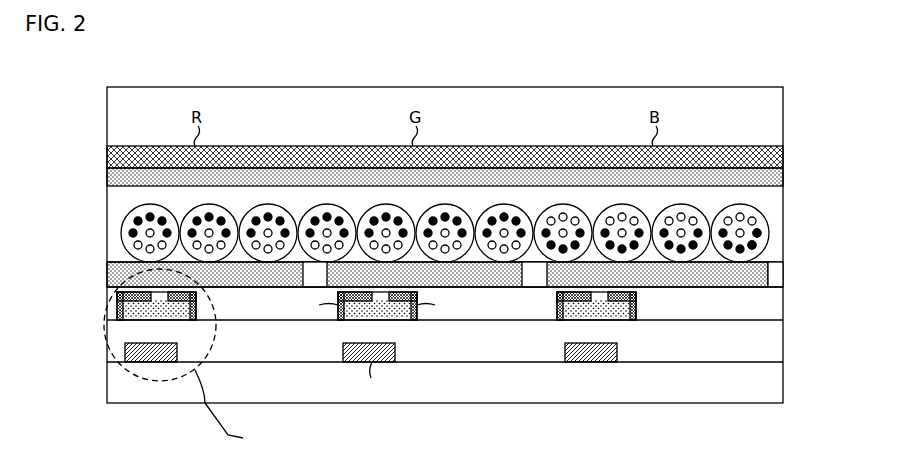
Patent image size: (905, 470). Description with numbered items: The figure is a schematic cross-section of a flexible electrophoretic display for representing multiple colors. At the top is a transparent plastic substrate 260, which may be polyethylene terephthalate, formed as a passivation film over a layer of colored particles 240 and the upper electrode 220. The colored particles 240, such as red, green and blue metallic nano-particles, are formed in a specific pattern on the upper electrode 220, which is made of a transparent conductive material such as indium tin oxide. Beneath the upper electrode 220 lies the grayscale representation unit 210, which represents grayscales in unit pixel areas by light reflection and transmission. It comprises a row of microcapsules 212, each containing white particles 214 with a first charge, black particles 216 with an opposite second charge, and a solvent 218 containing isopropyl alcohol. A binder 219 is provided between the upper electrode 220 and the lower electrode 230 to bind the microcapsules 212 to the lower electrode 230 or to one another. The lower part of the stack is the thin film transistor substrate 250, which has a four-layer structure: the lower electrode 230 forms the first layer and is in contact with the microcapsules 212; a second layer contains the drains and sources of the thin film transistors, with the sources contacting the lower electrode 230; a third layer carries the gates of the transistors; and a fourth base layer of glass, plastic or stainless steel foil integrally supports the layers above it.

The transparent plastic substrate 260 is at (783, 103).
The colored particles 240 is at (783, 156).
The upper electrode 220 is at (783, 181).
The binder 219 is at (97, 193).
The grayscale representation unit 210 is at (442, 230).
The microcapsule 212 is at (97, 251).
The white particles 214 is at (768, 207).
The solvent 218 is at (771, 233).
The black particles 216 is at (760, 252).
The lower electrode 230 is at (783, 282).
The TFT substrate 250 is at (97, 287).